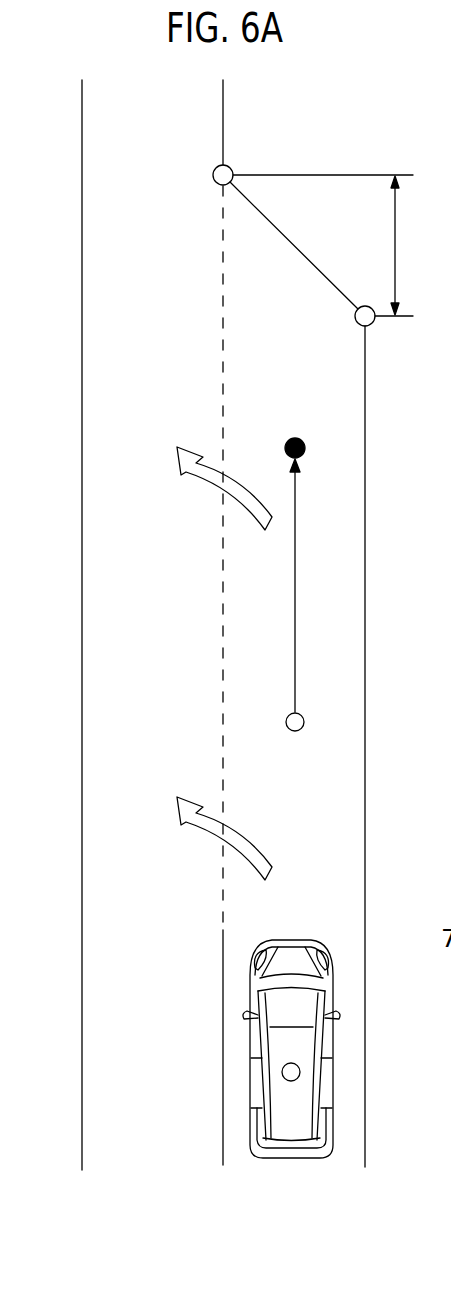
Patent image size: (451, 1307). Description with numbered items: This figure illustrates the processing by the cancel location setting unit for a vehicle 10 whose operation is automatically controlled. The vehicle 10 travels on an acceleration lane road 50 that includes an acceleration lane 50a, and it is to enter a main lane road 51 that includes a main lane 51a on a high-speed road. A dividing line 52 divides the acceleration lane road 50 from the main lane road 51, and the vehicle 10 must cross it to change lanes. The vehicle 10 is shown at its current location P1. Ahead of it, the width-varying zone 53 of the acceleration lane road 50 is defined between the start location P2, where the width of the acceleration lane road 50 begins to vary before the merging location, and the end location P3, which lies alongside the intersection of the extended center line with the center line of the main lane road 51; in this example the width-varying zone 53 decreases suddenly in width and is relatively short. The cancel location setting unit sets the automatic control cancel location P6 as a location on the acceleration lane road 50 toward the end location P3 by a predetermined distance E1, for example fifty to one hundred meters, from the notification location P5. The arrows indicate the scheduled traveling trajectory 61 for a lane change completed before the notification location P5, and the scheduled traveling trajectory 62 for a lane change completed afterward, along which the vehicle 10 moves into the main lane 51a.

The vehicle 10 is at (321, 1117).
The acceleration lane road 50 is at (343, 917).
The acceleration lane 50a is at (353, 820).
The main lane road 51 is at (102, 983).
The main lane 51a is at (150, 820).
The dividing line 52 is at (222, 718).
The width-varying zone 53 is at (333, 245).
The scheduled traveling trajectory 61 is at (184, 828).
The scheduled traveling trajectory 62 is at (201, 491).
The current location P1 is at (300, 1070).
The start location of the width-varying zone P2 is at (372, 323).
The end location of the width-varying zone P3 is at (229, 169).
The notification location P5 is at (304, 719).
The automatic control cancel location P6 is at (300, 440).
The predetermined distance E1 is at (314, 585).